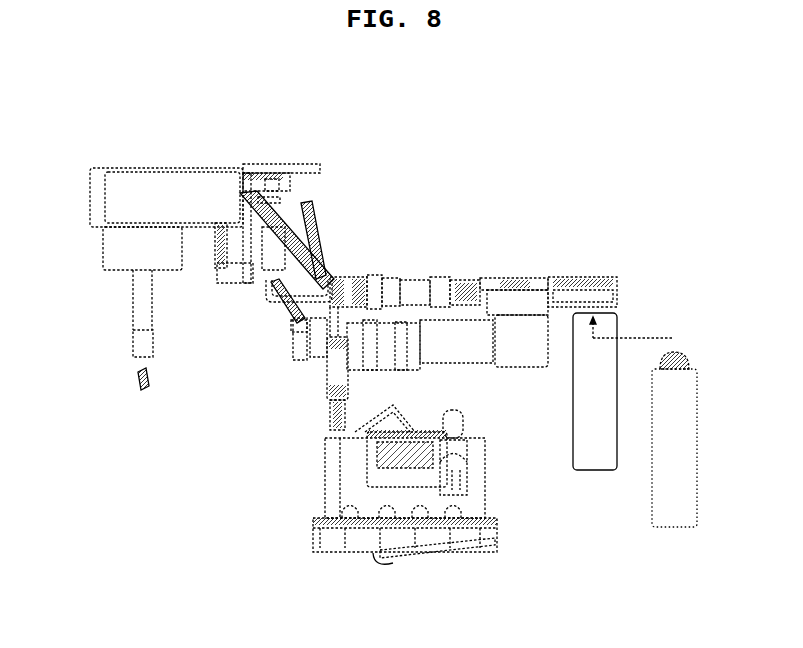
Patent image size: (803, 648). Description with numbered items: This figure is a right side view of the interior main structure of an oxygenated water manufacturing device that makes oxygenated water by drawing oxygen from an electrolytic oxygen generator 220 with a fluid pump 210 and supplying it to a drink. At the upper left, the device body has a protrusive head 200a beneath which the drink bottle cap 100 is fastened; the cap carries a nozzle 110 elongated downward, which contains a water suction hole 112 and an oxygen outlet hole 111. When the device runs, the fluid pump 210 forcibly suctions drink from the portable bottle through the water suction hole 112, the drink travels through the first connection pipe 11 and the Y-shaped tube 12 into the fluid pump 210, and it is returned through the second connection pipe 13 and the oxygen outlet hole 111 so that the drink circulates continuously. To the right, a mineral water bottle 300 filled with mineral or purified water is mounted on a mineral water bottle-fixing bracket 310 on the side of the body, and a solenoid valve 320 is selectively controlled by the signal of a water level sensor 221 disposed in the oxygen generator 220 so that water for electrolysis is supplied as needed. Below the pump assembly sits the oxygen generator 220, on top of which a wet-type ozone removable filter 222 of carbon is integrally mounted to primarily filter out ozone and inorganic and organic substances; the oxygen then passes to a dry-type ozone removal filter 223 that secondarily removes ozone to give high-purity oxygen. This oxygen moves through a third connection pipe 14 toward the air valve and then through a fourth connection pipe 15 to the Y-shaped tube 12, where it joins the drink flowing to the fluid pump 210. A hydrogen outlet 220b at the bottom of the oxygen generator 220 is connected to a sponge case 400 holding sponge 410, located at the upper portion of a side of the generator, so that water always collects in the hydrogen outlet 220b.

The protrusive head 200a is at (118, 167).
The drink bottle cap 100 is at (100, 250).
The nozzle 110 is at (133, 300).
The water suction hole 112 is at (180, 340).
The oxygen outlet hole 111 is at (138, 370).
The second connection pipe 13 is at (280, 204).
The first connection pipe 11 is at (318, 230).
The solenoid valve 320 is at (380, 290).
The Y-shaped tube 12 is at (450, 290).
The fluid pump 210 is at (503, 280).
The mineral water bottle-fixing bracket 310 is at (585, 290).
The mineral water bottle 300 is at (616, 354).
The fourth connection pipe 15 is at (262, 312).
The third connection pipe 14 is at (278, 318).
The dry-type ozone removal filter 223 is at (317, 373).
The wet-type ozone removable filter 222 is at (388, 412).
The oxygen generator 220 is at (337, 488).
The water level sensor 221 is at (470, 447).
The hydrogen outlet 220b is at (490, 500).
The sponge 410 is at (405, 460).
The sponge case 400 is at (433, 483).